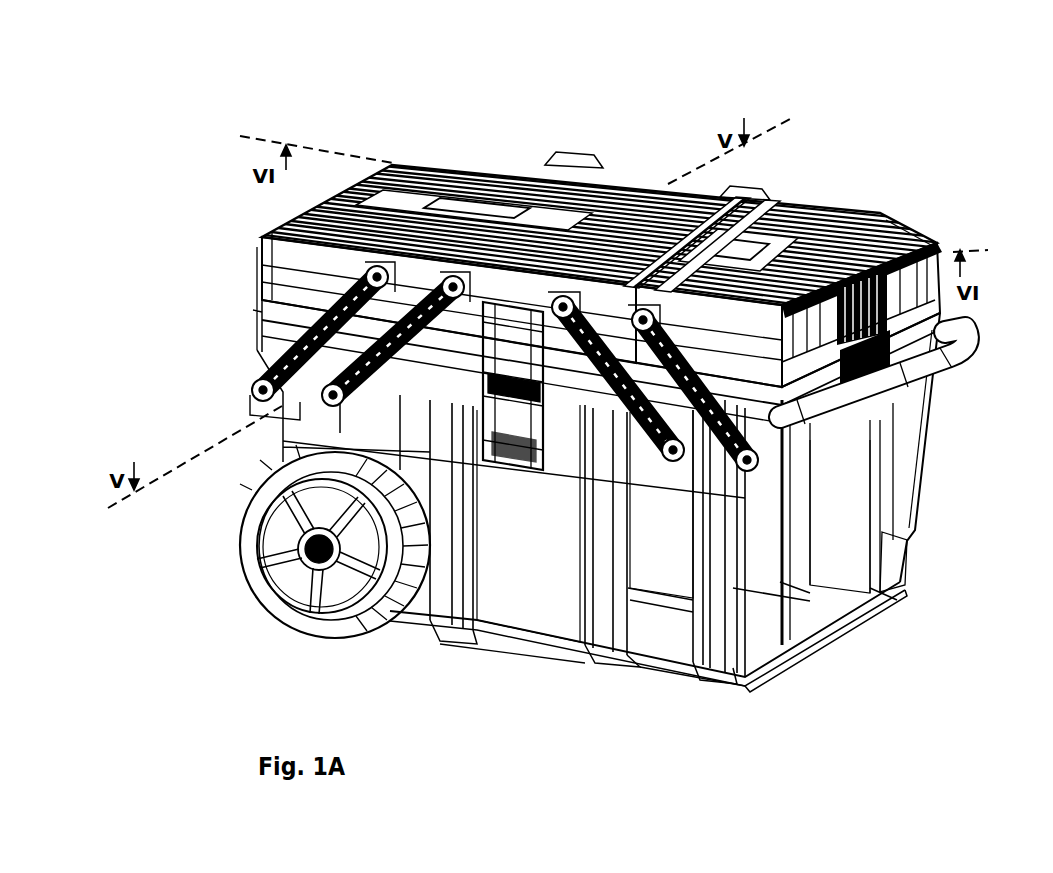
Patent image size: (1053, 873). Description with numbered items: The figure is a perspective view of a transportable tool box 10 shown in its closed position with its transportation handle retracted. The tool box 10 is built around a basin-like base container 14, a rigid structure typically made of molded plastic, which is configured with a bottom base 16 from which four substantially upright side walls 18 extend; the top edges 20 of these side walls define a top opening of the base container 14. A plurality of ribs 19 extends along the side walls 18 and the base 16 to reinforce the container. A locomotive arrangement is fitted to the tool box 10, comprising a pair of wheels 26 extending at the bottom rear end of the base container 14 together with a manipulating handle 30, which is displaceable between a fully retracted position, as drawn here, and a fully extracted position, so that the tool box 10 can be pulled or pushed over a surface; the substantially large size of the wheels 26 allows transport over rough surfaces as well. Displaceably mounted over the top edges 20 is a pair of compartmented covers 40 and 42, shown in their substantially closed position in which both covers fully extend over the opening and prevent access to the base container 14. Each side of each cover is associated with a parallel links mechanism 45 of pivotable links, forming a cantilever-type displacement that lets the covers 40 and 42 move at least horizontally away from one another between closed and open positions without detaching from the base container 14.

The tool box 10 is at (930, 118).
The base container 14 is at (922, 443).
The bottom base 16 is at (766, 683).
The side walls 18 is at (517, 587).
The ribs 19 is at (606, 626).
The top edges 20 is at (263, 300).
The wheels 26 is at (255, 560).
The manipulating handle 30 is at (952, 343).
The compartmented cover 40 is at (786, 195).
The compartmented cover 42 is at (492, 180).
The parallel links mechanism 45 is at (256, 386).